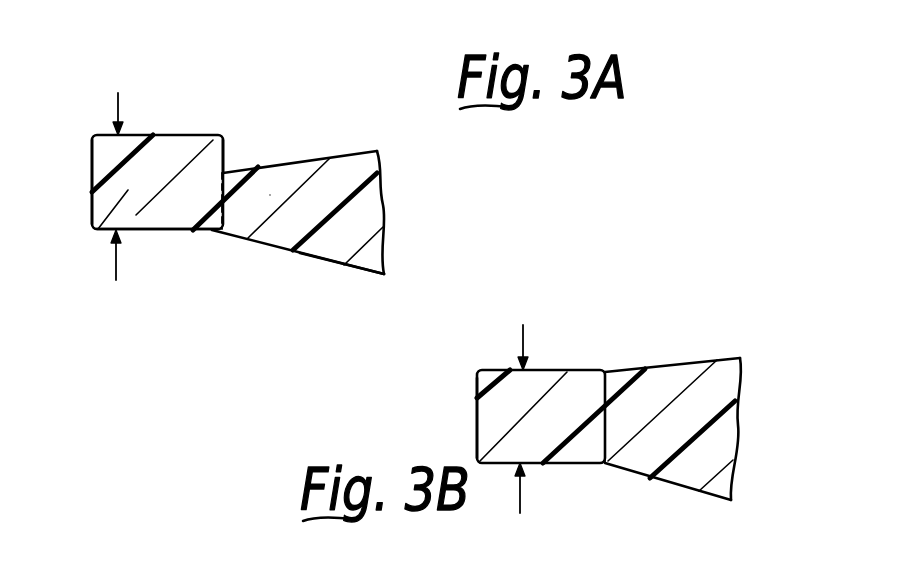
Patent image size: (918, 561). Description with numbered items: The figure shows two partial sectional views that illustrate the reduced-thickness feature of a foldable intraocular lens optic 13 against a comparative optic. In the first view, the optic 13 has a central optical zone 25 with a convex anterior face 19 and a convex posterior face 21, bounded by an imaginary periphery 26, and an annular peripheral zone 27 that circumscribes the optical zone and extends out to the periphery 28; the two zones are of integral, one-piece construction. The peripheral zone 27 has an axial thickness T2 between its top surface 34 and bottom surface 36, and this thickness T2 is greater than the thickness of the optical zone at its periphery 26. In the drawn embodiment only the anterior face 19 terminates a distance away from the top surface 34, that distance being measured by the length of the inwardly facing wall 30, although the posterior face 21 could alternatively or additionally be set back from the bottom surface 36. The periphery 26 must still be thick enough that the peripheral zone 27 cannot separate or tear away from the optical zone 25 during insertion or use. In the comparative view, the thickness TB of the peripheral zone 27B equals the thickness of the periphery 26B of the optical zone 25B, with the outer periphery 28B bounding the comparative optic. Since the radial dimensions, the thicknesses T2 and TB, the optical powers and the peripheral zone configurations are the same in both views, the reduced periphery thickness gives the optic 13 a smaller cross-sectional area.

In FIG. 3A, the optic 13 is at (188, 80).
In FIG. 3A, the anterior face 19 is at (355, 150).
In FIG. 3A, the posterior face 21 is at (355, 270).
In FIG. 3A, the optical zone 25 is at (378, 202).
In FIG. 3A, the periphery 26 is at (212, 232).
In FIG. 3A, the peripheral zone 27 is at (92, 229).
In FIG. 3A, the periphery 28 is at (92, 163).
In FIG. 3A, the inwardly facing wall 30 is at (225, 152).
In FIG. 3A, the top surface 34 is at (165, 135).
In FIG. 3A, the bottom surface 36 is at (98, 232).
In FIG. 3A, the thickness of the peripheral zone T2 is at (150, 78).
In FIG. 3B, the optical zone 25B is at (718, 392).
In FIG. 3B, the periphery 26B is at (595, 392).
In FIG. 3B, the peripheral zone 27B is at (500, 393).
In FIG. 3B, the side face of tip 28B is at (477, 425).
In FIG. 3B, the thickness of the peripheral zone TB is at (527, 325).